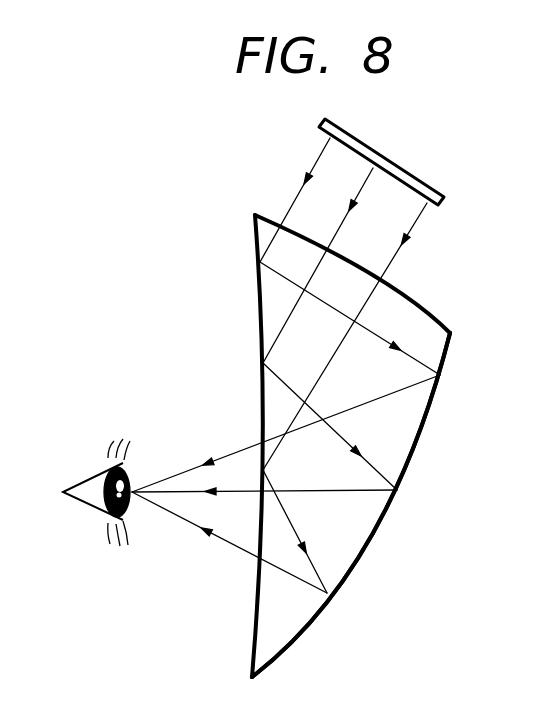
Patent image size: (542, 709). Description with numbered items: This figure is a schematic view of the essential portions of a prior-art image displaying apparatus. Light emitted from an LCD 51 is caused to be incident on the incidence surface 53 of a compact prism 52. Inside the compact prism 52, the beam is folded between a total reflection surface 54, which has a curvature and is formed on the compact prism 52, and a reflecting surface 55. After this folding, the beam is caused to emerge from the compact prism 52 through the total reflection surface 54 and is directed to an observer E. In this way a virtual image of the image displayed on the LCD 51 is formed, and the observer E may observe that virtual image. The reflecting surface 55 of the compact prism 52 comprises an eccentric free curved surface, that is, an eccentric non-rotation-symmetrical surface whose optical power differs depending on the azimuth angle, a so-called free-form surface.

The LCD 51 is at (410, 180).
The compact prism 52 is at (442, 353).
The incidence surface 53 is at (422, 303).
The total reflection surface 54 is at (263, 377).
The reflecting surface 55 is at (418, 448).
The observer E is at (95, 508).